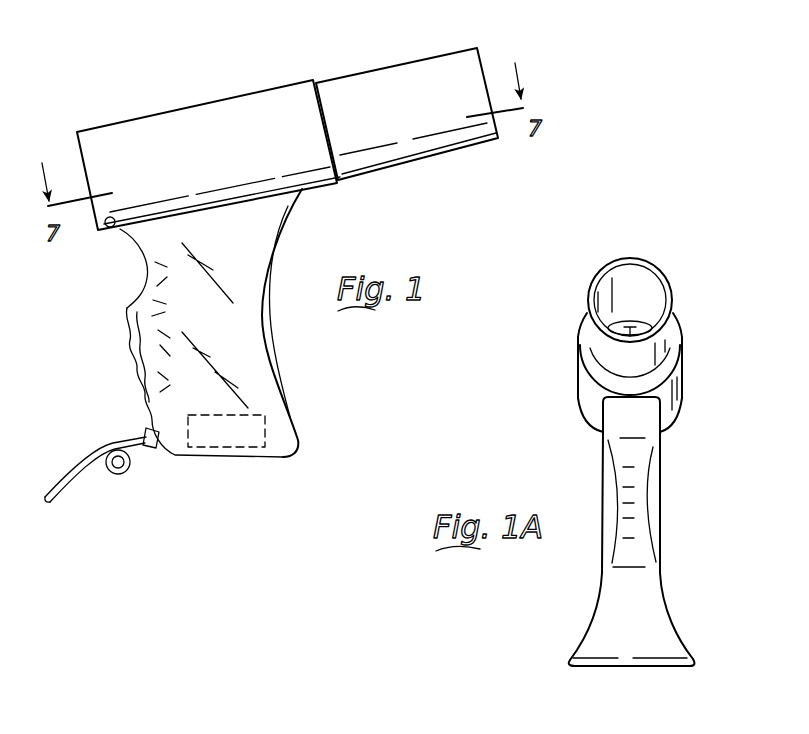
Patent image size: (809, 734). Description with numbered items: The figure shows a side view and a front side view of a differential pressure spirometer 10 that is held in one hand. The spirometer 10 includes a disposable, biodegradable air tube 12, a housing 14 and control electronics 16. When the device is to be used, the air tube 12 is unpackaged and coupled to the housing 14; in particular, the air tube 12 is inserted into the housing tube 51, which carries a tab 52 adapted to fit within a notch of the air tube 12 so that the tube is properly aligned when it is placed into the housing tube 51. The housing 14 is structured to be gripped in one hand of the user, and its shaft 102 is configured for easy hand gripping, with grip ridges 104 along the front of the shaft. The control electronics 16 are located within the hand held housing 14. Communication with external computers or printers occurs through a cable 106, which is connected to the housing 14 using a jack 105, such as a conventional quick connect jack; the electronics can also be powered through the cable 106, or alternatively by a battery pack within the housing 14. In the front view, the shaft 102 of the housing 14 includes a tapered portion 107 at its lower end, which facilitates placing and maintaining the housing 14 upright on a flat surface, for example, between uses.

In FIG. 1, the spirometer 10 is at (96, 387).
In FIG. 1A, the spirometer 10 is at (539, 642).
In FIG. 1, the air tube 12 is at (395, 62).
In FIG. 1A, the air tube 12 is at (602, 348).
In FIG. 1, the housing 14 is at (303, 251).
In FIG. 1A, the housing 14 is at (587, 530).
In FIG. 1, the control electronics 16 is at (247, 452).
In FIG. 1, the housing tube 51 is at (228, 167).
In FIG. 1, the tab 52 is at (117, 233).
In FIG. 1, the shaft 102 is at (208, 357).
In FIG. 1, the finger grip ridges 104 is at (127, 310).
In FIG. 1, the jack 105 is at (157, 452).
In FIG. 1, the cable 106 is at (78, 472).
In FIG. 1A, the tapered portion 107 is at (694, 641).